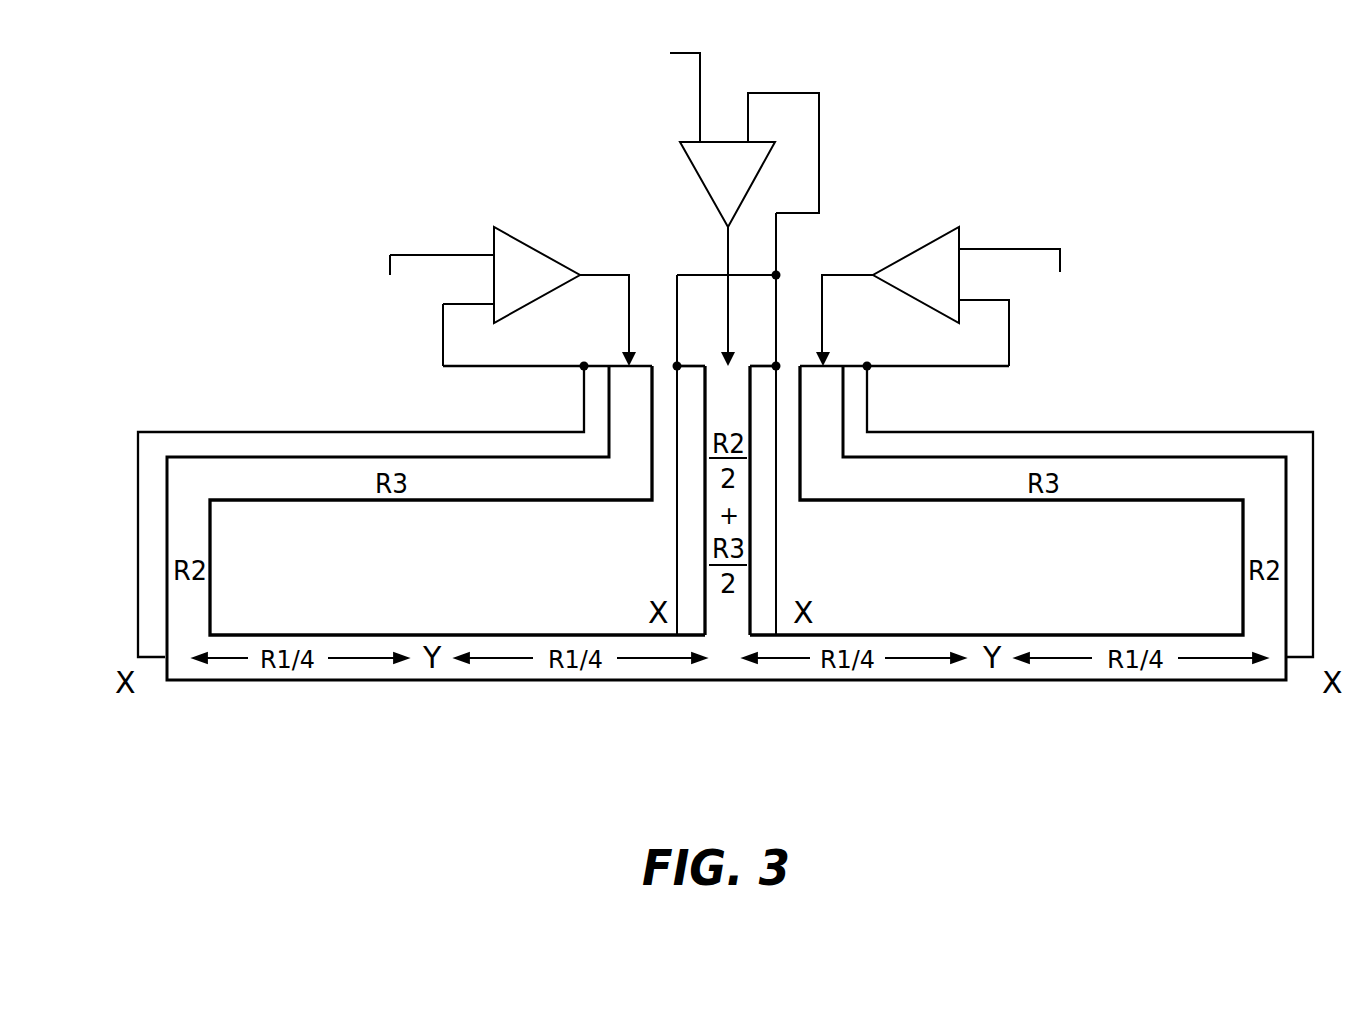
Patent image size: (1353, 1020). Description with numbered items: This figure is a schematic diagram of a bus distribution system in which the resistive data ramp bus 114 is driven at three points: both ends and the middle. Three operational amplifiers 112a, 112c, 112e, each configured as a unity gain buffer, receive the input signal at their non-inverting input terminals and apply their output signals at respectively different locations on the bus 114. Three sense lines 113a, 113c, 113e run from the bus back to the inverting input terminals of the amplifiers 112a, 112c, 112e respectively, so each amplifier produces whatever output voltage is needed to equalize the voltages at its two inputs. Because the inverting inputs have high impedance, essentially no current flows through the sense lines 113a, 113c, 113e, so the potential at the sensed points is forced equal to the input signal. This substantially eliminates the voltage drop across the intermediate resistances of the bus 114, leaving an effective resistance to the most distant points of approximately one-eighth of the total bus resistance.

The operational amplifier 112a is at (532, 240).
The operational amplifier 112c is at (700, 183).
The operational amplifier 112e is at (915, 240).
The sense line 113a is at (167, 432).
The sense line 113c is at (675, 547).
The sense line 113e is at (1155, 432).
The bus 114 is at (703, 680).